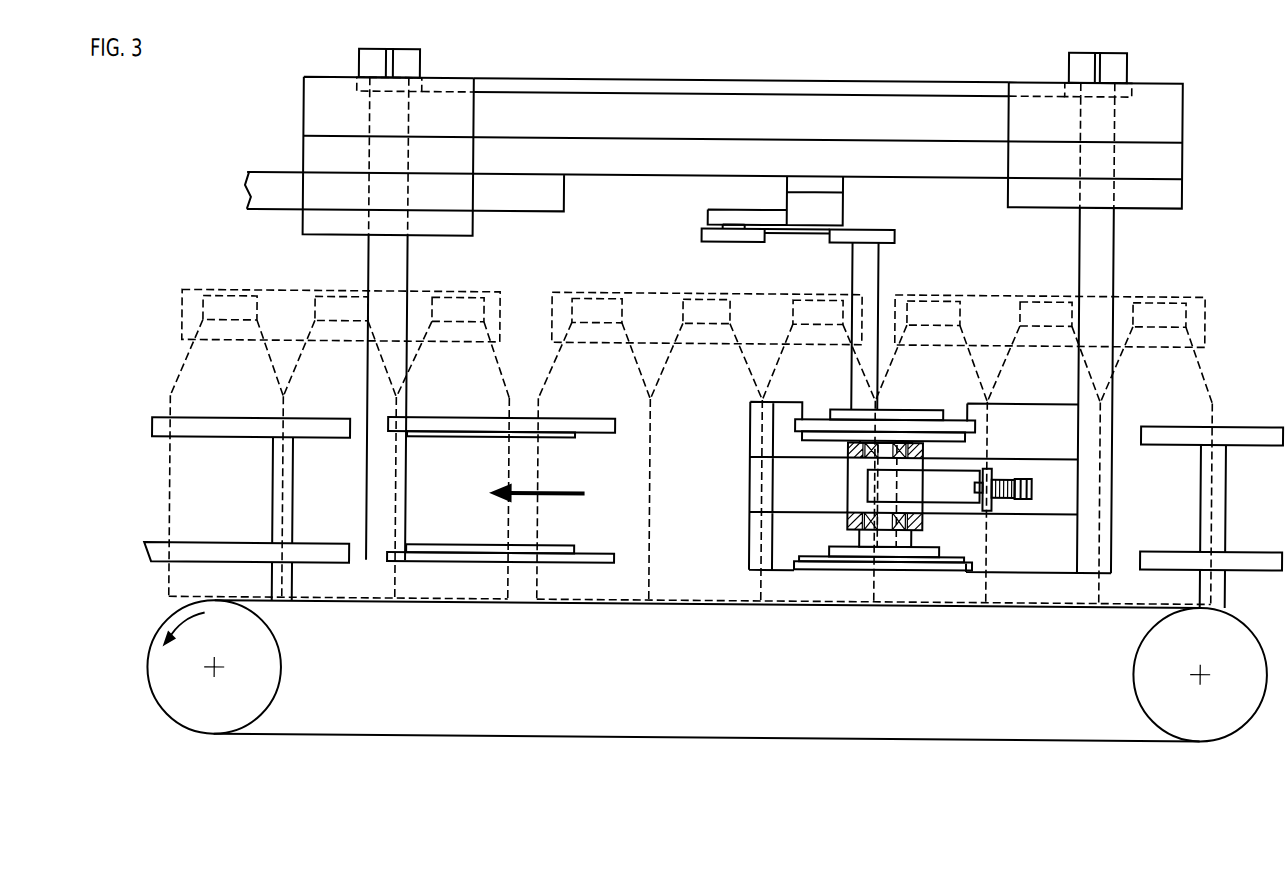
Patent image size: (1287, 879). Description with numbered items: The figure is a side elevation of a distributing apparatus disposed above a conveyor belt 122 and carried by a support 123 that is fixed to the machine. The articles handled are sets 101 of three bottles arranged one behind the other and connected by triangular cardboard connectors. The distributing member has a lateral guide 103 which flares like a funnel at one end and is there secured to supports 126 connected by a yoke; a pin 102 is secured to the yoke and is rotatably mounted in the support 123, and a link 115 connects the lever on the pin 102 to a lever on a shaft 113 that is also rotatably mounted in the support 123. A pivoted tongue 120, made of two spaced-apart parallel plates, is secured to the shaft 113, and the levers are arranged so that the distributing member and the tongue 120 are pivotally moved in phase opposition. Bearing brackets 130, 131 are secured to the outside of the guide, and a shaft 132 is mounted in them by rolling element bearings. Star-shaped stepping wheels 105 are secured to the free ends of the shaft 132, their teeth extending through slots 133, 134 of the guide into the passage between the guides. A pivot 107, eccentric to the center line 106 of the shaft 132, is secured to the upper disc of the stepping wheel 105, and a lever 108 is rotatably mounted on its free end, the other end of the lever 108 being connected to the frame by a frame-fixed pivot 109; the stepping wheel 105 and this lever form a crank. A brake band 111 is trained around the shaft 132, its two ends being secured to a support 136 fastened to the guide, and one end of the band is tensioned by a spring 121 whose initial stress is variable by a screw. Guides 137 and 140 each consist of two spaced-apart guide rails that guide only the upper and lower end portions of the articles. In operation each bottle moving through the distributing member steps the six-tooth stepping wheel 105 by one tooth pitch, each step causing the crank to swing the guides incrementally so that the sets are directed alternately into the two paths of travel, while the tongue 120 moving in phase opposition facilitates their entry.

The sets 101 is at (282, 311).
The pin 102 is at (1094, 90).
The lateral guide 103 is at (1056, 545).
The star-shaped stepping wheel 105 is at (823, 432).
The center line 106 is at (890, 501).
The pivot 107 is at (860, 248).
The lever 108 is at (800, 232).
The pivot 109 is at (734, 226).
The brake band 111 is at (988, 497).
The shaft 113 is at (384, 540).
The link 115 is at (485, 84).
The pivoted tongue 120 is at (498, 556).
The spring 121 is at (1004, 497).
The conveyor belt 122 is at (364, 737).
The support 123 is at (604, 153).
The supports 126 is at (1091, 256).
The bearing bracket 130 is at (852, 461).
The bearing bracket 131 is at (864, 525).
The shaft 132 is at (888, 531).
The slot 133 is at (822, 457).
The slot 134 is at (971, 485).
The support 136 is at (972, 500).
The guide 137 is at (225, 433).
The guide 140 is at (1228, 433).